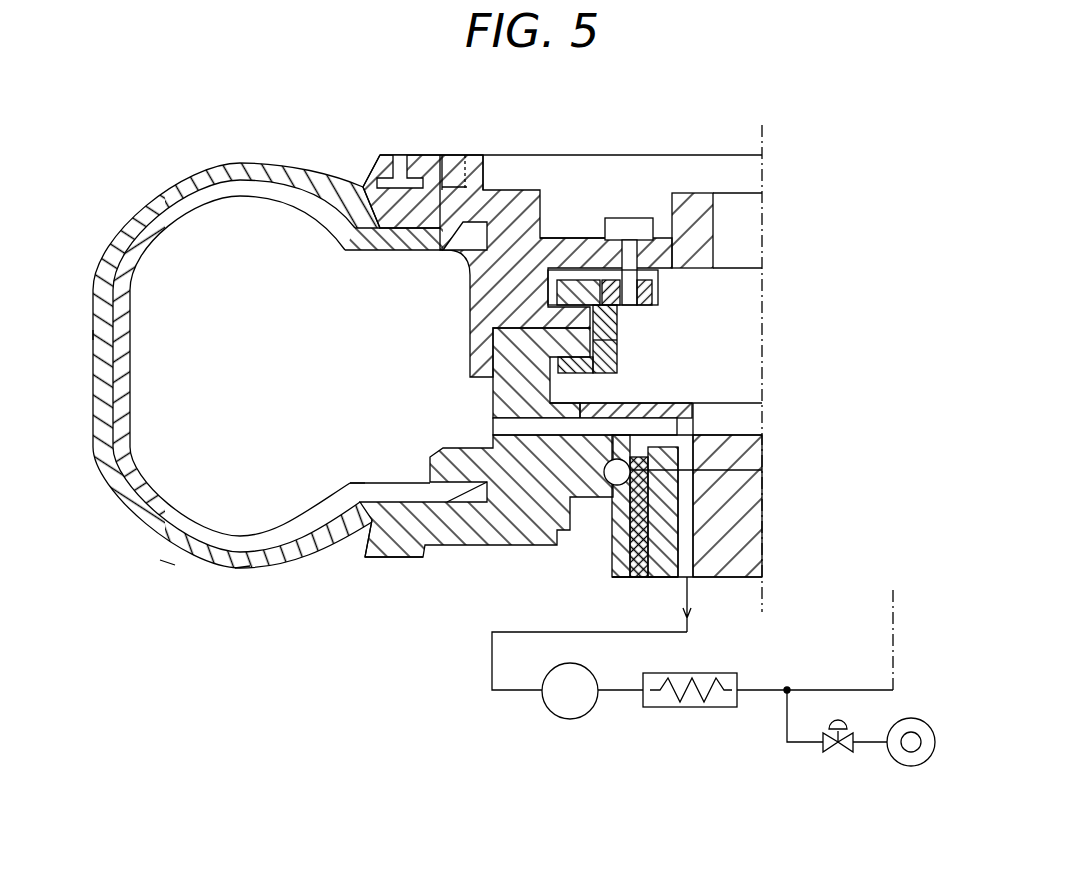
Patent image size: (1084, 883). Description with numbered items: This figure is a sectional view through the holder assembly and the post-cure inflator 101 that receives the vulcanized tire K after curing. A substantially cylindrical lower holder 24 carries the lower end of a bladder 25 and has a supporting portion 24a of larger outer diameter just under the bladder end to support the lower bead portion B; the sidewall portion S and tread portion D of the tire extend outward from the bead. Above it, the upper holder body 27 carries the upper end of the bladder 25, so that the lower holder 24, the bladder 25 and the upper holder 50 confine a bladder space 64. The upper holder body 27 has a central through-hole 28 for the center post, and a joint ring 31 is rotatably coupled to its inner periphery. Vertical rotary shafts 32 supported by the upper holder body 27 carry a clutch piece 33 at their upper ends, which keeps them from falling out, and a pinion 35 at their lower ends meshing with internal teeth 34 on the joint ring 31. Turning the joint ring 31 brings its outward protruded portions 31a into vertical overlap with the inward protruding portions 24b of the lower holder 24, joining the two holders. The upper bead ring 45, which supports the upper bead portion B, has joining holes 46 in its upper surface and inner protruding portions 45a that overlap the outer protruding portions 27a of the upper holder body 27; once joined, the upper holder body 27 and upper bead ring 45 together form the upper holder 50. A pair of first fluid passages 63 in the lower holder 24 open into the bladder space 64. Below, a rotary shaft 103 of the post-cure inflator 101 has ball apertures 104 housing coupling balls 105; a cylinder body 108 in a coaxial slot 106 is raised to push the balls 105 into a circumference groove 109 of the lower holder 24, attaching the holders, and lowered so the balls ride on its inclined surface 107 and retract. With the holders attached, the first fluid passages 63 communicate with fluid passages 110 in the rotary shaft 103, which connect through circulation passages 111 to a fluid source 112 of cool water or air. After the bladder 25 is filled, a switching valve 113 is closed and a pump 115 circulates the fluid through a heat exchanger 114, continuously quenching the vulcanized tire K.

The bladder 25 is at (272, 200).
The bladder space 64 is at (284, 367).
The tread portion D is at (93, 400).
The sidewall portion S is at (168, 562).
The vulcanized tire K is at (243, 570).
The bead portion B is at (358, 490).
The upper holder body 27 is at (483, 318).
The upper bead ring 45 is at (360, 186).
The joining holes 46 is at (400, 157).
The protruding portions 27a is at (452, 165).
The protruding portions 45a is at (490, 160).
The upper holder 50 is at (533, 133).
The rotary shafts 32 is at (575, 240).
The clutch piece 33 is at (630, 232).
The through-hole 28 is at (713, 225).
The pinion 35 is at (658, 290).
The internal teeth 34 is at (617, 315).
The protruding portions 24b is at (617, 345).
The protruded portions 31a is at (590, 380).
The joint ring 31 is at (665, 408).
The lower holder 24 is at (497, 398).
The first fluid passages 63 is at (495, 428).
The ball apertures 104 is at (605, 462).
The supporting portion 24a is at (388, 560).
The post-cure inflator 101 is at (779, 522).
The rotary shaft 103 is at (730, 493).
The coupling balls 105 is at (612, 505).
The cylinder body 108 is at (635, 560).
The inclined surface 107 is at (608, 466).
The circumference groove 109 is at (762, 470).
The fluid passages 110 is at (690, 580).
The slot 106 is at (640, 578).
The circulation passages 111 is at (843, 690).
The pump 115 is at (570, 720).
The heat exchanger 114 is at (680, 707).
The switching valve 113 is at (828, 748).
The fluid source 112 is at (911, 766).